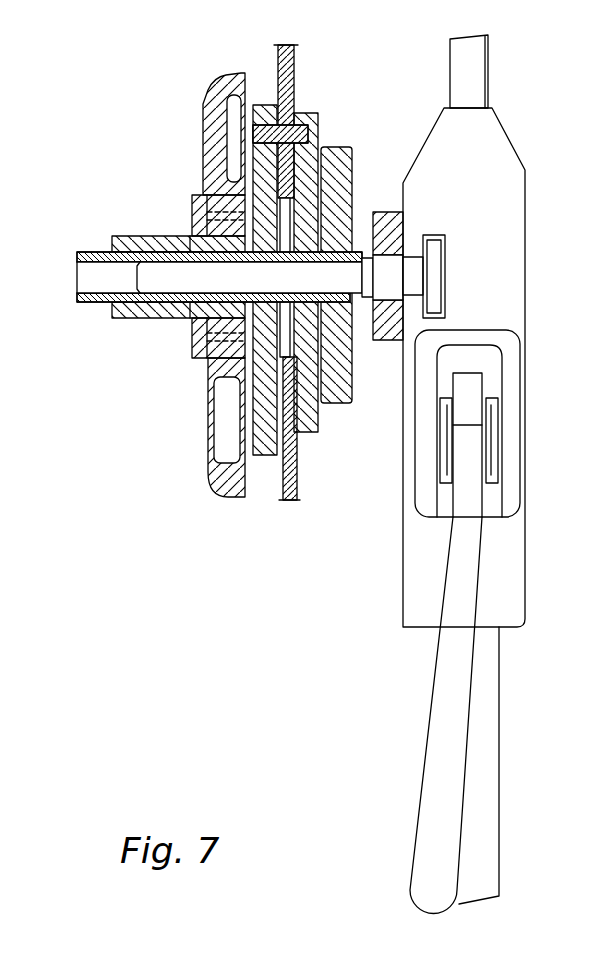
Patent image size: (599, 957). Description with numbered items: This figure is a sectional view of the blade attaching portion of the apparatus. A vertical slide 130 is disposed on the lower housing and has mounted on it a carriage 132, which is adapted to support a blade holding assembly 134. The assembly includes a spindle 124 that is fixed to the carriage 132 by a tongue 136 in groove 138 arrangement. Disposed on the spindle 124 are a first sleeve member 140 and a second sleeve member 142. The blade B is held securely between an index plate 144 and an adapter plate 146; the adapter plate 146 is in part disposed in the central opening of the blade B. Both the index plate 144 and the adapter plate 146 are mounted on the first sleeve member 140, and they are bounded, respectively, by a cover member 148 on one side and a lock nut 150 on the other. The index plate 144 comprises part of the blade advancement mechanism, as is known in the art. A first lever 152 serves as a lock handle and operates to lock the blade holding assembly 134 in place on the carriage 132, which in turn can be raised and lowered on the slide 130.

The spindle 124 is at (263, 288).
The vertical slide 130 is at (450, 58).
The carriage 132 is at (414, 597).
The blade holding assembly 134 is at (163, 344).
The tongue 136 is at (437, 258).
The groove 138 is at (438, 290).
The first sleeve member 140 is at (362, 298).
The second sleeve member 142 is at (92, 302).
The index plate 144 is at (268, 457).
The adapter plate 146 is at (308, 428).
The cover member 148 is at (224, 482).
The lock nut 150 is at (330, 149).
The first lever 152 is at (430, 733).
The blade B is at (299, 489).